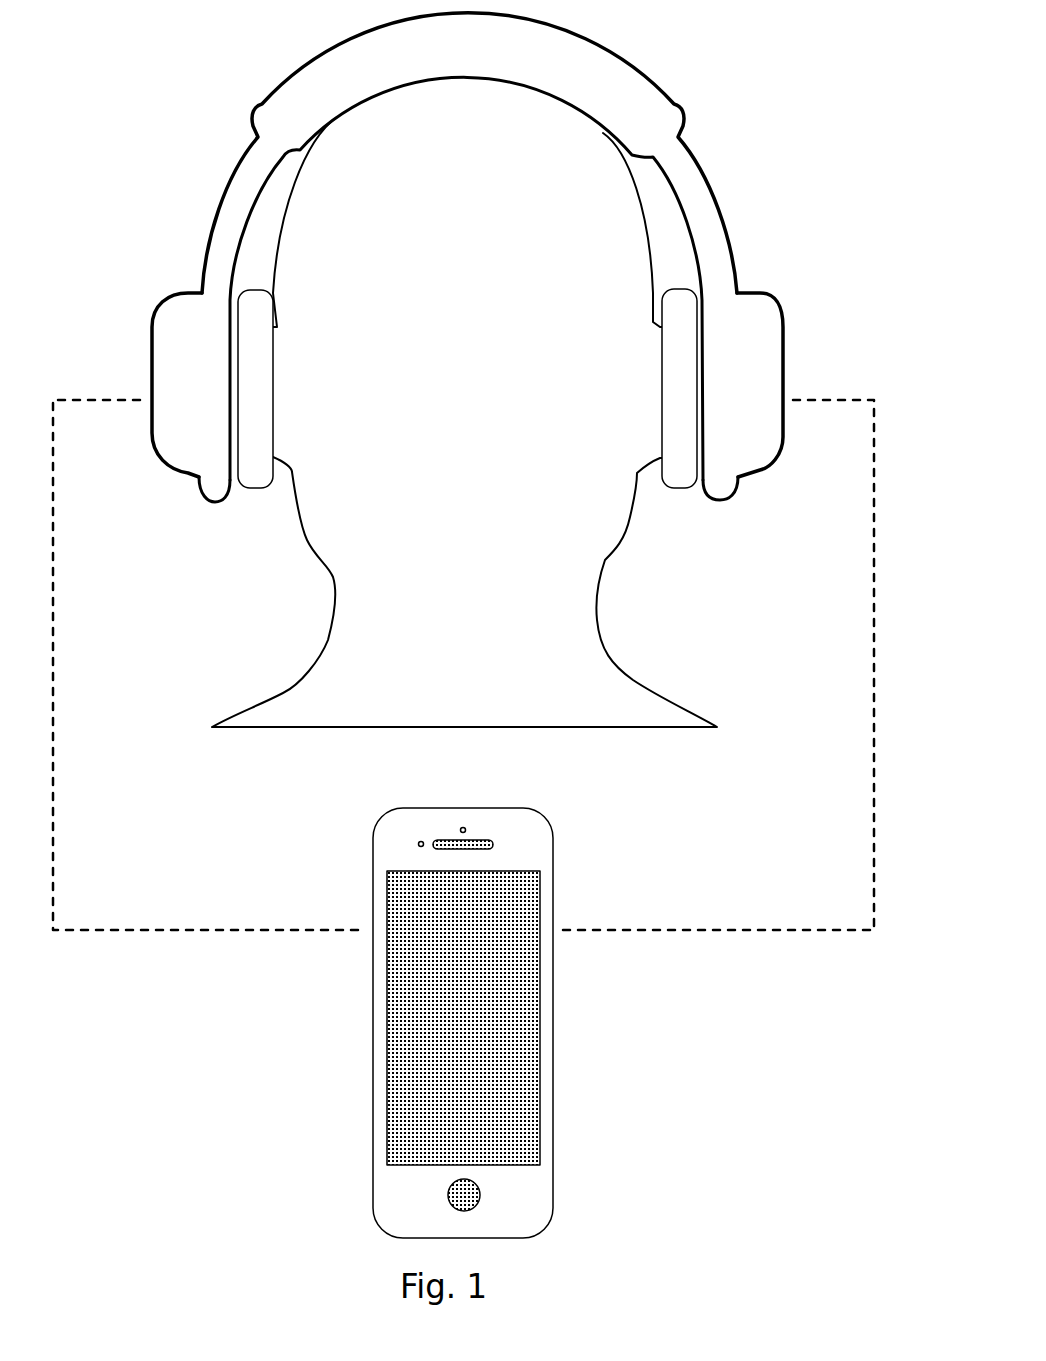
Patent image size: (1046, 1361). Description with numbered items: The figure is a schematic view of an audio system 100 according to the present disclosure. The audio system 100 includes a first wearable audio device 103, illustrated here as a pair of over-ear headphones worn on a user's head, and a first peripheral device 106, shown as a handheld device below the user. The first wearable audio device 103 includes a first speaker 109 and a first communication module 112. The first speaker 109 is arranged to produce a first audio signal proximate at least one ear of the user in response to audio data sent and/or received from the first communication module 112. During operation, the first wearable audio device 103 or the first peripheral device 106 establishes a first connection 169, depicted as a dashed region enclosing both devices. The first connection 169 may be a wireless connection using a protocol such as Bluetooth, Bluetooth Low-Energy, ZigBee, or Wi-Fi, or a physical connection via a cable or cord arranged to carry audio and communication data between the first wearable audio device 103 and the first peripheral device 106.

The audio system 100 is at (464, 257).
The first wearable audio device 103 is at (451, 257).
The first peripheral device 106 is at (553, 852).
The first speaker 109 is at (706, 362).
The first communication module 112 is at (140, 363).
The first connection 169 is at (825, 400).